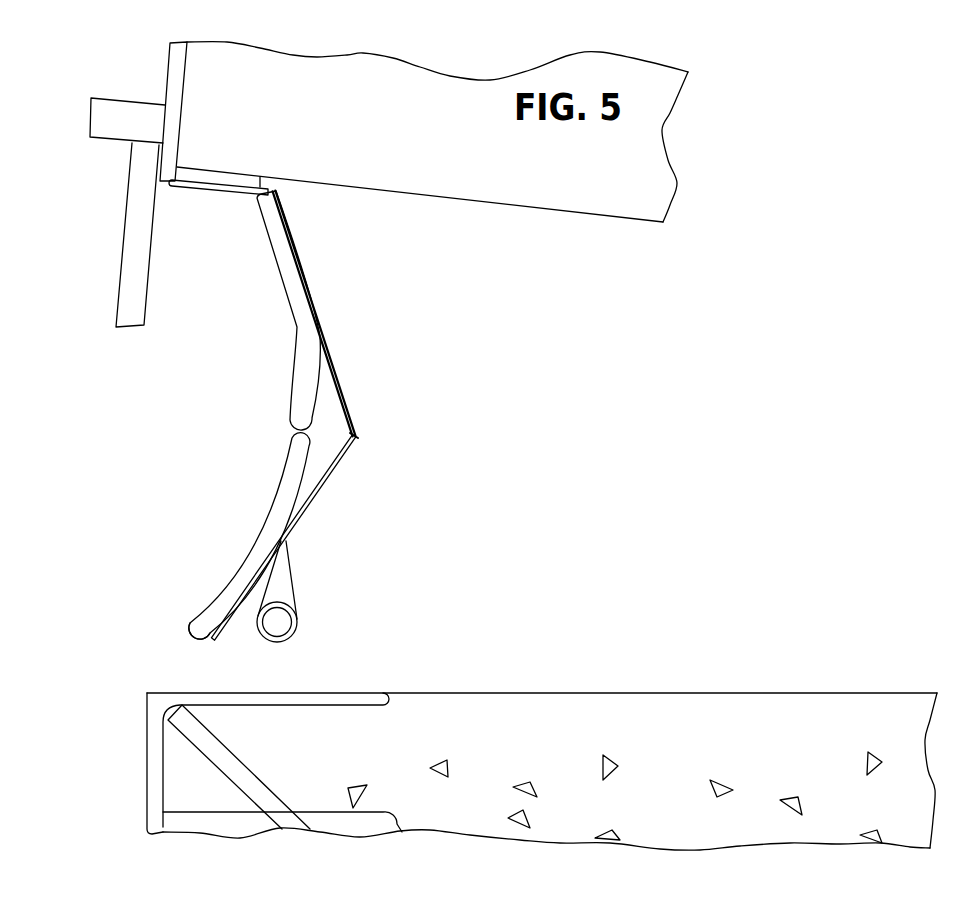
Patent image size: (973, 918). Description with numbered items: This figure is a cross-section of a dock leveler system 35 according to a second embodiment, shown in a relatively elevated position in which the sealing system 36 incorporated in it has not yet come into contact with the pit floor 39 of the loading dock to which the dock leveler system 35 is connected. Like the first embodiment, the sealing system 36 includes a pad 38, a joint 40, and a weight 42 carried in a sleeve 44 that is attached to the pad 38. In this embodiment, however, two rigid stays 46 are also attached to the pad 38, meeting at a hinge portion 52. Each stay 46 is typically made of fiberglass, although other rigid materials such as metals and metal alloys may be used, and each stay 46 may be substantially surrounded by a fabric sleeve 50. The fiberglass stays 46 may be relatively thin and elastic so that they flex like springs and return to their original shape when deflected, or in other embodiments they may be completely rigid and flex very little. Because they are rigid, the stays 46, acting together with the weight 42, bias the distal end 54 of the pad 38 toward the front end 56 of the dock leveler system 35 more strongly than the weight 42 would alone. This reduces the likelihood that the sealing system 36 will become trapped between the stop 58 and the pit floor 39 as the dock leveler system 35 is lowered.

The dock leveler system 35 is at (508, 200).
The sealing system 36 is at (178, 438).
The pad 38 is at (280, 285).
The pit floor 39 is at (448, 692).
The joint 40 is at (291, 430).
The weight 42 is at (279, 642).
The sleeve 44 is at (292, 577).
The rigid stay 46 is at (319, 311).
The fabric sleeve 50 is at (302, 268).
The hinge portion 52 is at (358, 437).
The distal end 54 is at (192, 637).
The front end 56 is at (166, 78).
The stop 58 is at (133, 328).